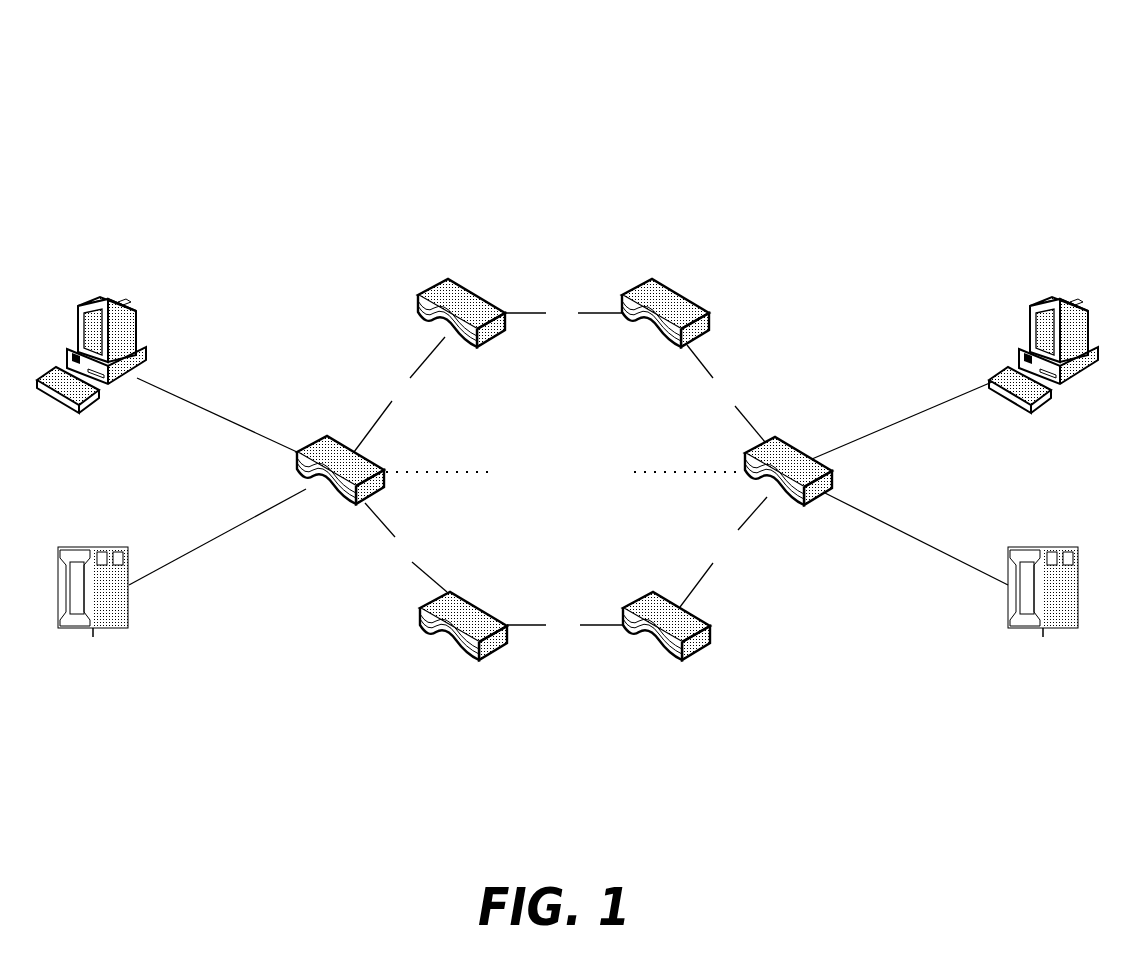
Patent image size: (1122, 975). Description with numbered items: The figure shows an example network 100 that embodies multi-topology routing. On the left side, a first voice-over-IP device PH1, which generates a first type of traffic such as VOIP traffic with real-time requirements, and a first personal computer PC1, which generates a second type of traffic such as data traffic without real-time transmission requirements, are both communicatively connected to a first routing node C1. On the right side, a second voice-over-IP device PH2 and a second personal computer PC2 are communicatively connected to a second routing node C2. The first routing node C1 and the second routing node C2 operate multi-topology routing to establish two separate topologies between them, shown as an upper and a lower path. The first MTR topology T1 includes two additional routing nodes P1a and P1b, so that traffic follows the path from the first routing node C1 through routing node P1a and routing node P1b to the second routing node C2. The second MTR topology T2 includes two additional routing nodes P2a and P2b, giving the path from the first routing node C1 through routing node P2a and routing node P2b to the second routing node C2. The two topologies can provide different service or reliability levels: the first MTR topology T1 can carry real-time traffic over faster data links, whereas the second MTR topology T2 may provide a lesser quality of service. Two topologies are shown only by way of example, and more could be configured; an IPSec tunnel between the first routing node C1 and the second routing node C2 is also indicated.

The network 100 is at (112, 122).
The first personal computer PC1 is at (167, 374).
The second personal computer PC2 is at (955, 378).
The first voice-over-IP device PH1 is at (182, 579).
The second voice-over-IP device PH2 is at (950, 580).
The first routing node C1 is at (340, 487).
The second routing node C2 is at (788, 488).
The routing node P1a is at (461, 331).
The routing node P1b is at (665, 331).
The routing node P2a is at (463, 642).
The routing node P2b is at (666, 642).
The first MTR topology T1 is at (559, 376).
The second MTR topology T2 is at (566, 567).